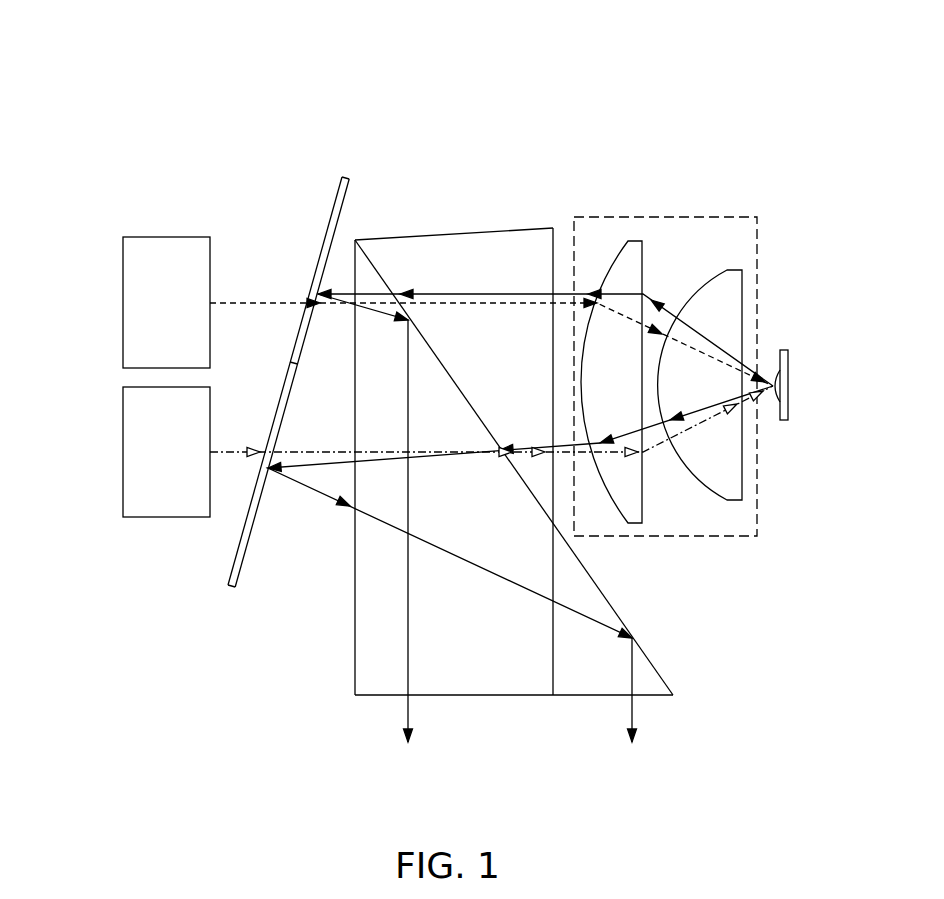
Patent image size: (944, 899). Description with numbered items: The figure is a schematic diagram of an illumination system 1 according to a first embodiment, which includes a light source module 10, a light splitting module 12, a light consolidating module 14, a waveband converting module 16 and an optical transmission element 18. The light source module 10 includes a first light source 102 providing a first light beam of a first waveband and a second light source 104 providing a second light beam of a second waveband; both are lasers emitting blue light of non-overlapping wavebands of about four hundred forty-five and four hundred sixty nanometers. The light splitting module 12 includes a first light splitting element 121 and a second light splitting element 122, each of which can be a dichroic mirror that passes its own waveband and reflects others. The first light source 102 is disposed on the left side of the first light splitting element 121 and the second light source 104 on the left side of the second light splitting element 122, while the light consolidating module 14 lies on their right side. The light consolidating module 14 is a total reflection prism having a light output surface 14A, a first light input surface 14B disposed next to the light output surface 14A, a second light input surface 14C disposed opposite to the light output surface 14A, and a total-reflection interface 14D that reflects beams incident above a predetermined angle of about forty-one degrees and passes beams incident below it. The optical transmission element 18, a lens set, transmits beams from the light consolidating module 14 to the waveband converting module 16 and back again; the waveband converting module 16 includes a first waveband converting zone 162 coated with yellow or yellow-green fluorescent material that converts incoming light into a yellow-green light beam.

The illumination system 1 is at (160, 76).
The light source module 10 is at (72, 262).
The first light source 102 is at (123, 303).
The second light source 104 is at (123, 453).
The light splitting module 12 is at (289, 344).
The first light splitting element 121 is at (323, 237).
The second light splitting element 122 is at (240, 573).
The light consolidating module 14 is at (490, 446).
The light output surface 14A is at (460, 695).
The first light input surface 14B is at (355, 662).
The second light input surface 14C is at (387, 238).
The total-reflection interface 14D is at (622, 620).
The waveband converting module 16 is at (785, 360).
The first waveband converting zone 162 is at (773, 402).
The optical transmission element 18 is at (637, 216).